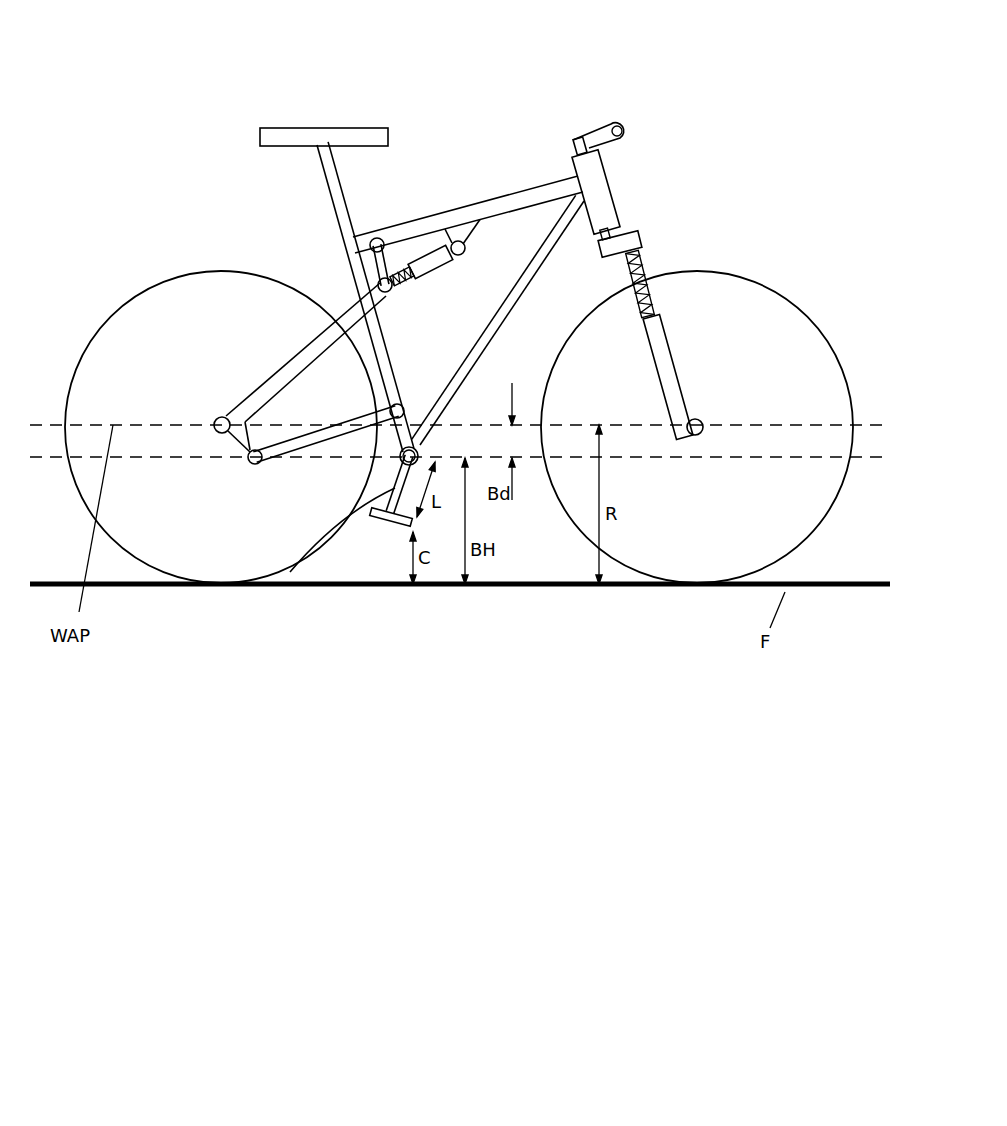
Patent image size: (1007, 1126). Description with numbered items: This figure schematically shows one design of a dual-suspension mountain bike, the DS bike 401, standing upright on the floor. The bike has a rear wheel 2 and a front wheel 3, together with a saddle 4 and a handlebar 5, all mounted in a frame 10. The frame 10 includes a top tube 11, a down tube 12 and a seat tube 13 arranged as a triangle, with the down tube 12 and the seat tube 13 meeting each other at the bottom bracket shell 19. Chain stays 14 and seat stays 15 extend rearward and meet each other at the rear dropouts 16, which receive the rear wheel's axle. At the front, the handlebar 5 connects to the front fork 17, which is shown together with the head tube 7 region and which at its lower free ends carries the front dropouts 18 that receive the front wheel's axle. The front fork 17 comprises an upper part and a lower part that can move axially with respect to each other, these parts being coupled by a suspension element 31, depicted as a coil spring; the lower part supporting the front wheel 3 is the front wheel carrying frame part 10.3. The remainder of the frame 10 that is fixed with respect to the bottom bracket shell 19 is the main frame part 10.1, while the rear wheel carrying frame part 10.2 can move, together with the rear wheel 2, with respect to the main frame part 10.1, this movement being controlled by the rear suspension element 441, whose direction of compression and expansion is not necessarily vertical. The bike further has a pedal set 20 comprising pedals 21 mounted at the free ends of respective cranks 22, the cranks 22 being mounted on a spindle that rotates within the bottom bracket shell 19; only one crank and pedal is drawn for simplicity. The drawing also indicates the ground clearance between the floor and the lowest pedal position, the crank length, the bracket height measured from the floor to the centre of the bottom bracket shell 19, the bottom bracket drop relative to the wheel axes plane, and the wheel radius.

The DS bike 401 is at (198, 70).
The rear wheel 2 is at (148, 289).
The front wheel 3 is at (753, 280).
The saddle 4 is at (348, 128).
The handlebar 5 is at (622, 125).
The head tube with stem 7 is at (578, 138).
The frame 10 is at (472, 140).
The main frame part 10.1 is at (530, 183).
The rear wheel carrying frame part 10.2 is at (275, 365).
The front wheel carrying frame part 10.3 is at (680, 368).
The top tube 11 is at (468, 212).
The down tube 12 is at (523, 287).
The seat tube 13 is at (378, 328).
The chain stays 14 is at (287, 449).
The seat stays 15 is at (302, 338).
The rear dropouts 16 is at (216, 419).
The front fork 17 is at (658, 312).
The front dropouts 18 is at (703, 419).
The bottom bracket shell 19 is at (414, 446).
The pedal set 20 is at (322, 618).
The pedal 21 is at (395, 545).
The crank 22 is at (362, 500).
The suspension element 31 is at (630, 252).
The rear suspension element 441 is at (413, 257).